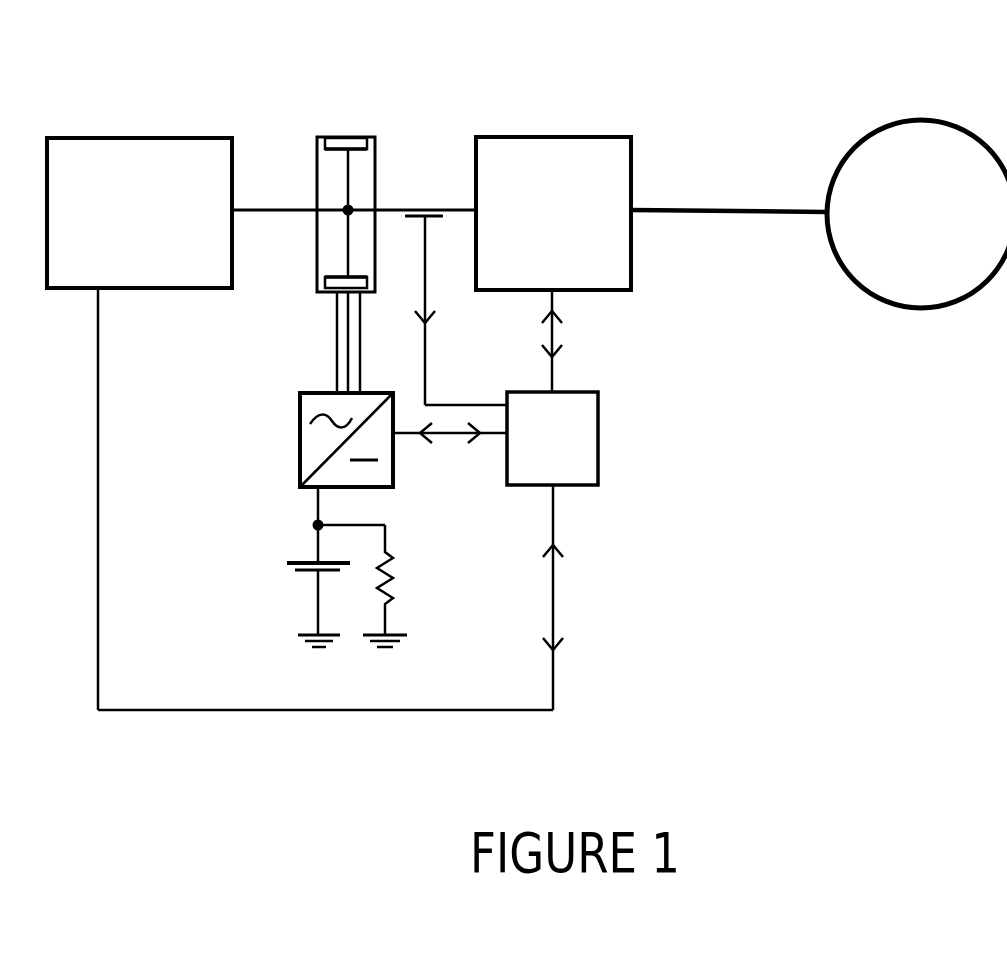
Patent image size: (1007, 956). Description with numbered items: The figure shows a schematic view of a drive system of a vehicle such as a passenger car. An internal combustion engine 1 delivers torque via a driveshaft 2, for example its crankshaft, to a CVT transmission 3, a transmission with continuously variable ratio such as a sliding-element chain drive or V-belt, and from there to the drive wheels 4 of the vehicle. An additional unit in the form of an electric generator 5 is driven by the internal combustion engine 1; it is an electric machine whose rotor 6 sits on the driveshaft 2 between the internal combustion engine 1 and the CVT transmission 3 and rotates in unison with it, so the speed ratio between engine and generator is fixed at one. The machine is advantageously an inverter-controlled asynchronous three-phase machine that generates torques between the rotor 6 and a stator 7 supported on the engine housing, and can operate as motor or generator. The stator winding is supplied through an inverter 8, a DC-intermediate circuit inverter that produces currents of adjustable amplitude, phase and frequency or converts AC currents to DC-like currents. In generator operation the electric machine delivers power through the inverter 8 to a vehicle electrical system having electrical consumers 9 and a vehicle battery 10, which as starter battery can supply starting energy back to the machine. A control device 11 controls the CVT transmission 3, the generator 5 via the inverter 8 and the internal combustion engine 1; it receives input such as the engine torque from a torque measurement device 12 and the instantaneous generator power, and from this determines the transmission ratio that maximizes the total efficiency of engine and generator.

The internal combustion engine 1 is at (150, 158).
The driveshaft 2 is at (273, 206).
The CVT transmission 3 is at (560, 160).
The drive wheels 4 is at (920, 140).
The electric generator 5 is at (372, 202).
The rotor 6 is at (350, 187).
The stator 7 is at (357, 138).
The inverter 8 is at (310, 452).
The electrical consumers 9 is at (395, 568).
The vehicle battery 10 is at (305, 572).
The control device 11 is at (585, 446).
The torque measurement device 12 is at (425, 210).